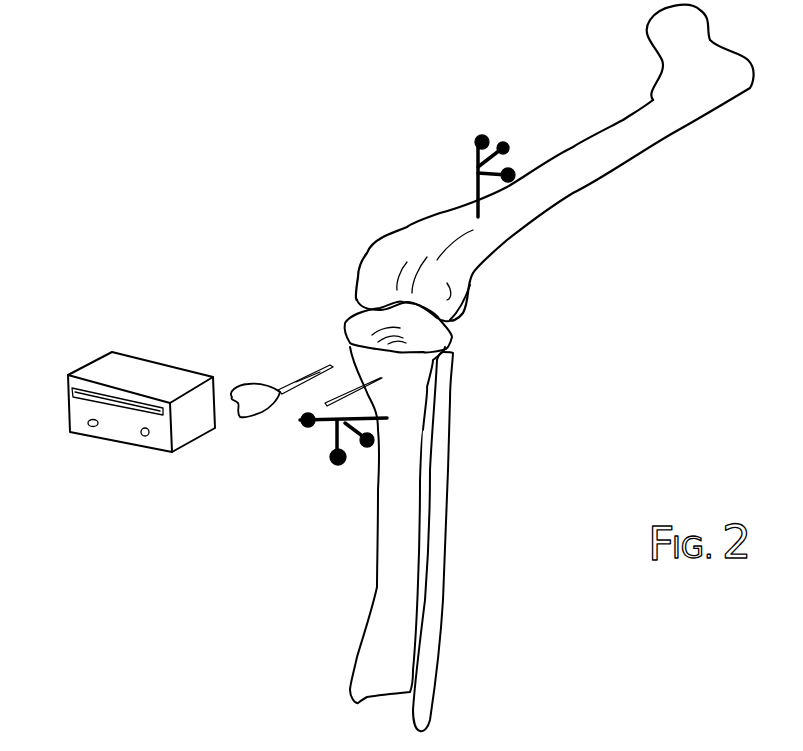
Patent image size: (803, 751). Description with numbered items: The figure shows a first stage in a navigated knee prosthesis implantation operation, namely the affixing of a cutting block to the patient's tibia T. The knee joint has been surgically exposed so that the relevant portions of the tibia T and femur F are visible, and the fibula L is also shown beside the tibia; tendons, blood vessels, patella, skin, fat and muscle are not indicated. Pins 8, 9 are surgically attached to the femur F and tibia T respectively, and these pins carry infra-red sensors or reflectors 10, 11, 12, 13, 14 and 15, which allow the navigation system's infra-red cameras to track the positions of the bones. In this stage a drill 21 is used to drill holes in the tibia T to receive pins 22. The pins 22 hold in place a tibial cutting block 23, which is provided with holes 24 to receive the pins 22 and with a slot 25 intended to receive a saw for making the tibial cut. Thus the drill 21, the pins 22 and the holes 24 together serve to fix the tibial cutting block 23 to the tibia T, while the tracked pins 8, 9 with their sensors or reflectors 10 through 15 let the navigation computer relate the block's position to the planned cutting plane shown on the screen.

The femur F is at (567, 197).
The tibia T is at (377, 545).
The fibula L is at (443, 552).
The pin 8 is at (488, 152).
The pin 9 is at (328, 467).
The infra-red sensor or reflector 10 is at (483, 133).
The infra-red sensor or reflector 11 is at (510, 142).
The infra-red sensor or reflector 12 is at (515, 170).
The infra-red sensor or reflector 13 is at (305, 430).
The infra-red sensor or reflector 14 is at (333, 467).
The infra-red sensor or reflector 15 is at (367, 450).
The drill 21 is at (282, 378).
The pin 22 is at (372, 393).
The tibial cutting block 23 is at (115, 407).
The holes 24 is at (143, 435).
The slot 25 is at (88, 397).